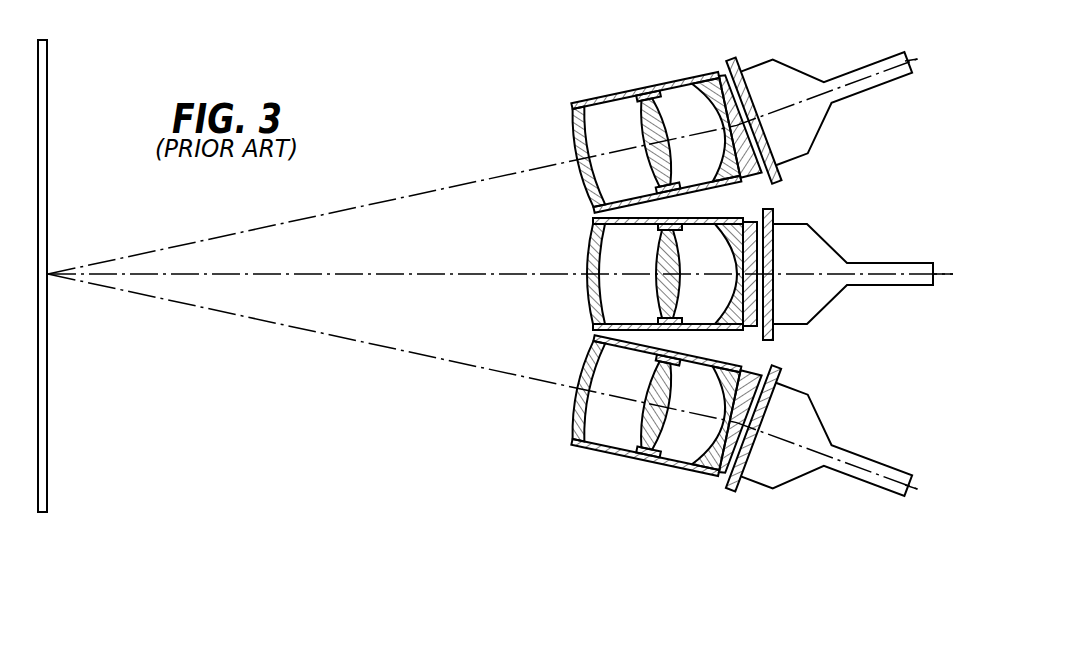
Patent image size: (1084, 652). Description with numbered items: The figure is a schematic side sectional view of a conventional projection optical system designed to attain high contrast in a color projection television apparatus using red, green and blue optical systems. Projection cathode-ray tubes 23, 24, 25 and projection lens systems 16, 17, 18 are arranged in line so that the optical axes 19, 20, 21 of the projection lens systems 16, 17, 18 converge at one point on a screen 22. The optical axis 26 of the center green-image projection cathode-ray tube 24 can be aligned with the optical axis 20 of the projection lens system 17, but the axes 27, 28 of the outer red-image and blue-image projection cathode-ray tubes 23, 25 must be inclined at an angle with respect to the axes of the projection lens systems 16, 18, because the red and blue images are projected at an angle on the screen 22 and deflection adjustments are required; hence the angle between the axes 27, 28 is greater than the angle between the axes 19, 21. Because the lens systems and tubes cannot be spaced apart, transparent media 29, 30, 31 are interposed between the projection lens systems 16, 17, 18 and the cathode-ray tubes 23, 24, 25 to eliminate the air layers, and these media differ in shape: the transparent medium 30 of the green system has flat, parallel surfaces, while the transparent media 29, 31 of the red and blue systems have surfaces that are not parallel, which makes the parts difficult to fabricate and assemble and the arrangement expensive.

The projection lens system 16 is at (617, 104).
The projection lens system 17 is at (597, 256).
The projection lens system 18 is at (596, 449).
The optical axis 19 is at (286, 224).
The optical axis 20 is at (290, 273).
The optical axis 21 is at (288, 322).
The screen 22 is at (47, 420).
The projection cathode-ray tube 23 is at (800, 70).
The projection cathode-ray tube 24 is at (818, 242).
The projection cathode-ray tube 25 is at (816, 422).
The optical axis 26 is at (935, 279).
The optical axis 27 is at (918, 59).
The optical axis 28 is at (918, 490).
The transparent medium 29 is at (754, 176).
The transparent medium 30 is at (773, 183).
The transparent medium 31 is at (781, 352).